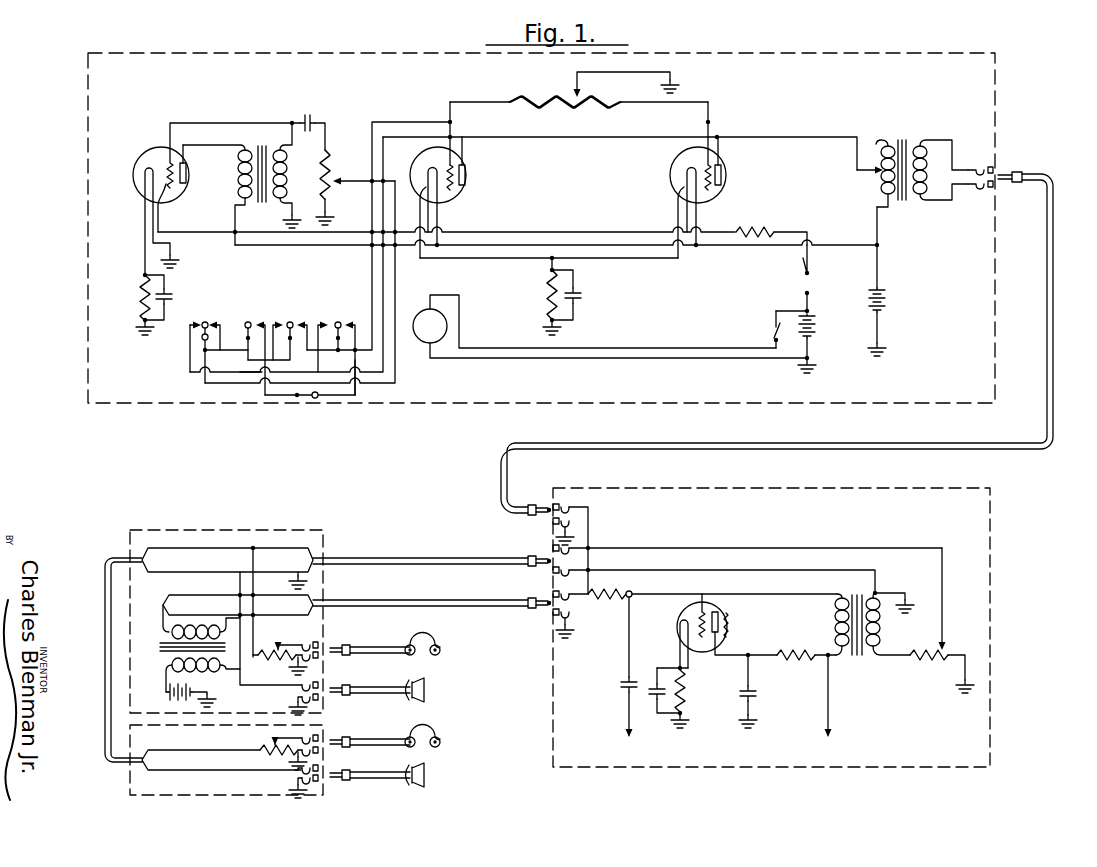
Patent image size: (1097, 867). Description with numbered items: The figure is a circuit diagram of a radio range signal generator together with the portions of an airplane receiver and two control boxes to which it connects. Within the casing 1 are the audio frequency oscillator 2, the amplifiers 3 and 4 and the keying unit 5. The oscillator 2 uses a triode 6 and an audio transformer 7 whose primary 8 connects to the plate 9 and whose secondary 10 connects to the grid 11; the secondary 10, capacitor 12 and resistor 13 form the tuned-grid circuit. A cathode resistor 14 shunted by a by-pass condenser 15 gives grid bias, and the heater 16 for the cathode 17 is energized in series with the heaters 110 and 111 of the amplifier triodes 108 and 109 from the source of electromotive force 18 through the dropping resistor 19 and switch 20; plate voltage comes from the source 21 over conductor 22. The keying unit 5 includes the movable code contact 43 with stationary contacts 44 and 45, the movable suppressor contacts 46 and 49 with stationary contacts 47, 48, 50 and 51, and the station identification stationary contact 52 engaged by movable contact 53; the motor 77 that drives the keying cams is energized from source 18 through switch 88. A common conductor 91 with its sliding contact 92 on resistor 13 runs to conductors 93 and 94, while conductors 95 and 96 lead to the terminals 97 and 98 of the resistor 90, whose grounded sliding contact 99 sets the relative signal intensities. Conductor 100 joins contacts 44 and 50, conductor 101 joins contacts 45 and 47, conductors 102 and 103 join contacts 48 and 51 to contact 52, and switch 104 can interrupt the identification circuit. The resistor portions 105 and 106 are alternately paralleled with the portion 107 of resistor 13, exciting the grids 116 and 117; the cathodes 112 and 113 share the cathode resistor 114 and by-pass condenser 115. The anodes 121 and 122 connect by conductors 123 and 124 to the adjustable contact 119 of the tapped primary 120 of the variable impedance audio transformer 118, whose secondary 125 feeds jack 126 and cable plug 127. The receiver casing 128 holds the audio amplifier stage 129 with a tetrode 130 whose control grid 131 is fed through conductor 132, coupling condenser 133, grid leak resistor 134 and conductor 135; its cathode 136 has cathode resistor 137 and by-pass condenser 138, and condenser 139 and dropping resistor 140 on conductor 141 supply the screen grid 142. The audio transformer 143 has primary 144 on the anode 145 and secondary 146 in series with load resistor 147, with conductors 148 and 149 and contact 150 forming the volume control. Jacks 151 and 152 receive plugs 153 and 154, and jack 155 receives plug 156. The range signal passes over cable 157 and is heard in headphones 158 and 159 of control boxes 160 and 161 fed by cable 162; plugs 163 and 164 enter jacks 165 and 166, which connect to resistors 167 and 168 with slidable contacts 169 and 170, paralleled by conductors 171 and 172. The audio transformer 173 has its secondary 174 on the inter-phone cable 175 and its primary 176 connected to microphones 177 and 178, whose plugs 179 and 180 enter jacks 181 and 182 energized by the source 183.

The casing 1 is at (996, 80).
The audio frequency oscillator 2 is at (247, 118).
The amplifier 3 is at (496, 176).
The amplifier 4 is at (754, 188).
The keying unit 5 is at (281, 298).
The triode 6 is at (133, 171).
The audio transformer 7 is at (264, 150).
The primary 8 is at (238, 169).
The plate 9 is at (187, 170).
The secondary 10 is at (285, 164).
The grid 11 is at (181, 188).
The capacitor 12 is at (310, 122).
The resistor 13 is at (326, 155).
The cathode resistor 14 is at (138, 302).
The by-pass condenser 15 is at (168, 296).
The heater 16 is at (166, 205).
The cathode 17 is at (156, 152).
The source of electromotive force 18 is at (816, 328).
The dropping resistor 19 is at (763, 231).
The switch 20 is at (812, 274).
The source of electromotive force 21 is at (886, 301).
The conductor 22 is at (299, 246).
The movable code contact 43 is at (204, 321).
The stationary contact 44 is at (195, 322).
The stationary contact 45 is at (211, 322).
The movable suppressor contact 46 is at (291, 321).
The stationary contact 47 is at (281, 321).
The stationary contact 48 is at (301, 321).
The movable suppressor contact 49 is at (338, 320).
The stationary contact 50 is at (327, 321).
The stationary contact 51 is at (348, 321).
The stationary contact 52 is at (258, 322).
The movable contact 53 is at (247, 321).
The electric motor 77 is at (419, 319).
The switch 88 is at (772, 322).
The resistor 90 is at (520, 98).
The common conductor 91 is at (385, 374).
The contact 92 is at (342, 177).
The conductor 93 is at (202, 339).
The conductor 94 is at (238, 348).
The conductor 95 is at (374, 350).
The conductor 96 is at (396, 384).
The terminal 97 is at (713, 121).
The terminal 98 is at (448, 135).
The sliding contact 99 is at (575, 73).
The conductor 100 is at (190, 364).
The conductor 101 is at (250, 374).
The conductor 102 is at (355, 390).
The conductor 103 is at (293, 399).
The switch 104 is at (315, 401).
The resistor portion 105 is at (510, 102).
The resistor portion 106 is at (616, 102).
The resistor portion 107 is at (328, 202).
The triode 108 is at (467, 165).
The triode 109 is at (723, 163).
The heater 110 is at (438, 202).
The heater 111 is at (703, 202).
The cathode 112 is at (421, 160).
The cathode 113 is at (670, 166).
The common cathode resistor 114 is at (546, 301).
The by-pass condenser 115 is at (578, 298).
The grid 116 is at (456, 193).
The grid 117 is at (719, 190).
The variable impedance audio transformer 118 is at (904, 140).
The adjustable contact 119 is at (870, 172).
The tapped primary 120 is at (885, 146).
The anode 121 is at (468, 183).
The anode 122 is at (727, 172).
The conductor 123 is at (784, 138).
The conductor 124 is at (616, 138).
The secondary 125 is at (928, 147).
The jack 126 is at (987, 168).
The cable plug 127 is at (1021, 176).
The casing 128 is at (990, 509).
The audio amplifier stage 129 is at (666, 640).
The tetrode 130 is at (732, 624).
The control grid 131 is at (710, 596).
The conductor 132 is at (627, 710).
The coupling condenser 133 is at (632, 674).
The grid leak resistor 134 is at (628, 593).
The conductor 135 is at (590, 527).
The cathode 136 is at (680, 618).
The cathode resistor 137 is at (687, 691).
The by-pass condenser 138 is at (653, 699).
The condenser 139 is at (758, 698).
The dropping resistor 140 is at (797, 662).
The conductor 141 is at (830, 707).
The screen grid 142 is at (723, 650).
The audio transformer 143 is at (855, 660).
The primary 144 is at (835, 630).
The anode 145 is at (712, 618).
The secondary 146 is at (881, 650).
The load resistor 147 is at (922, 663).
The conductor 148 is at (798, 573).
The conductor 149 is at (826, 548).
The contact 150 is at (944, 642).
The jack 151 is at (574, 510).
The jack 152 is at (578, 616).
The cable plug 153 is at (536, 518).
The cable plug 154 is at (533, 611).
The jack 155 is at (569, 574).
The cable plug 156 is at (533, 570).
The cable 157 is at (1054, 382).
The headphones 158 is at (440, 644).
The headphones 159 is at (442, 738).
The control box 160 is at (130, 536).
The control box 161 is at (130, 794).
The cable 162 is at (430, 560).
The plug 163 is at (352, 648).
The plug 164 is at (352, 740).
The jack 165 is at (315, 642).
The jack 166 is at (326, 734).
The resistor 167 is at (283, 660).
The resistor 168 is at (260, 758).
The slidable contact 169 is at (276, 642).
The slidable contact 170 is at (268, 740).
The conductor 171 is at (256, 562).
The conductor 172 is at (188, 753).
The audio transformer 173 is at (164, 644).
The secondary 174 is at (186, 626).
The inter-phone cable 175 is at (420, 603).
The primary 176 is at (196, 672).
The microphone 177 is at (428, 690).
The microphone 178 is at (428, 775).
The plug 179 is at (350, 690).
The plug 180 is at (357, 775).
The jack 181 is at (322, 684).
The jack 182 is at (323, 771).
The source of electromotive force 183 is at (166, 695).